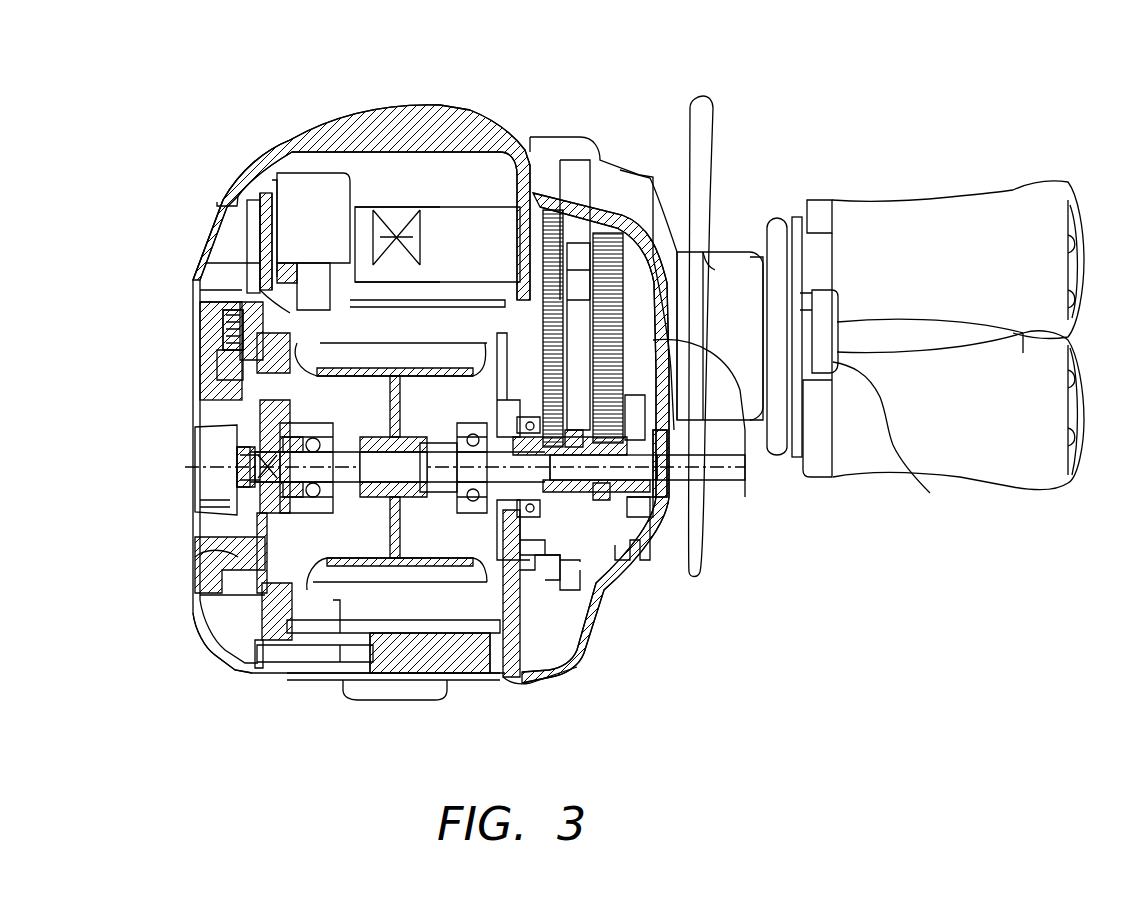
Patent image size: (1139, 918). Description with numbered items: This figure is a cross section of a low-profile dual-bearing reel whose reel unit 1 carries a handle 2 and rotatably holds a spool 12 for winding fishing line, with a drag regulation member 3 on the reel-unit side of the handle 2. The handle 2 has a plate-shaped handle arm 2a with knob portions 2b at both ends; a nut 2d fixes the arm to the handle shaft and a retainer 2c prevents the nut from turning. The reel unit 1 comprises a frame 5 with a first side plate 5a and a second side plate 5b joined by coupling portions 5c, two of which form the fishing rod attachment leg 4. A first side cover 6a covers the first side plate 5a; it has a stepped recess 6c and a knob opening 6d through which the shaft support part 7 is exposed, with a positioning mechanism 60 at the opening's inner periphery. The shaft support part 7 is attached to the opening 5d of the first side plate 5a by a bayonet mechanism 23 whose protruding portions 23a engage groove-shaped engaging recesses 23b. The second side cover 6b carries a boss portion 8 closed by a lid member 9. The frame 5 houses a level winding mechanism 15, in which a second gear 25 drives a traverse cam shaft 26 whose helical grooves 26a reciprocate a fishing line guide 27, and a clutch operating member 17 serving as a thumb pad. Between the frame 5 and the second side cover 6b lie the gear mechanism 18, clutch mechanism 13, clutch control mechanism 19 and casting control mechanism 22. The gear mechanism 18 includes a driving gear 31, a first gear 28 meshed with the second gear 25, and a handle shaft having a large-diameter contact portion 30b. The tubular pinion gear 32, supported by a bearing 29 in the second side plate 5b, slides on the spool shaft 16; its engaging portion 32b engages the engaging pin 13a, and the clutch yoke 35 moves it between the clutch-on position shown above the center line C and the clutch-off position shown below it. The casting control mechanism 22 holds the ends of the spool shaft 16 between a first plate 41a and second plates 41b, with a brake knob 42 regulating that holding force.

The reel unit 1 is at (487, 160).
The handle 2 is at (855, 190).
The handle arm 2a is at (843, 185).
The knob portions 2b is at (1012, 208).
The retainer 2c is at (820, 247).
The nut 2d is at (950, 485).
The drag regulation member 3 is at (713, 507).
The fishing rod attachment leg 4 is at (420, 687).
The frame 5 is at (503, 233).
The first side plate 5a is at (270, 277).
The second side plate 5b is at (537, 193).
The coupling portions 5c is at (333, 600).
The opening 5d is at (262, 272).
The first side cover 6a is at (197, 213).
The second side cover 6b is at (627, 590).
The recess 6c is at (245, 340).
The knob opening 6d is at (233, 552).
The shaft support part 7 is at (222, 413).
The boss portion 8 is at (572, 503).
The lid member 9 is at (668, 517).
The spool 12 is at (440, 356).
The clutch mechanism 13 is at (462, 497).
The engaging pin 13a is at (400, 440).
The level winding mechanism 15 is at (412, 190).
The spool shaft 16 is at (367, 455).
The clutch operating member 17 is at (400, 667).
The gear mechanism 18 is at (608, 242).
The clutch control mechanism 19 is at (605, 540).
The casting control mechanism 22 is at (195, 458).
The bayonet mechanism 23 is at (247, 598).
The protruding portions 23a is at (252, 610).
The engaging recesses 23b is at (257, 636).
The second gear 25 is at (560, 300).
The traverse cam shaft 26 is at (372, 215).
The helical grooves 26a is at (298, 220).
The fishing line guide 27 is at (262, 290).
The first gear 28 is at (712, 255).
The bearing 29 is at (527, 637).
The large-diameter contact portion 30b is at (578, 330).
The driving gear 31 is at (620, 170).
The pinion gear 32 is at (510, 543).
The engaging portion 32b is at (510, 610).
The clutch yoke 35 is at (602, 520).
The first plate 41a is at (257, 465).
The second plates 41b is at (667, 437).
The brake knob 42 is at (220, 473).
The positioning mechanism 60 is at (226, 318).
The center line C is at (715, 467).